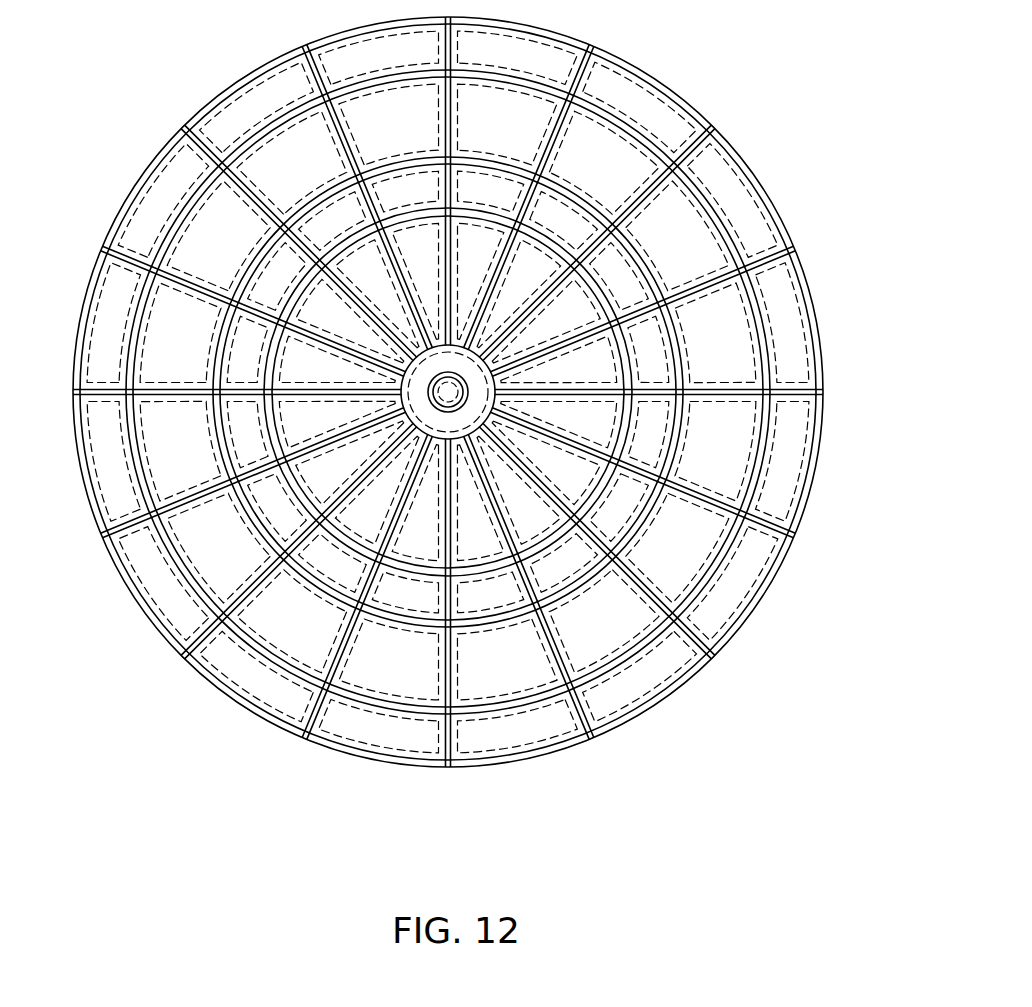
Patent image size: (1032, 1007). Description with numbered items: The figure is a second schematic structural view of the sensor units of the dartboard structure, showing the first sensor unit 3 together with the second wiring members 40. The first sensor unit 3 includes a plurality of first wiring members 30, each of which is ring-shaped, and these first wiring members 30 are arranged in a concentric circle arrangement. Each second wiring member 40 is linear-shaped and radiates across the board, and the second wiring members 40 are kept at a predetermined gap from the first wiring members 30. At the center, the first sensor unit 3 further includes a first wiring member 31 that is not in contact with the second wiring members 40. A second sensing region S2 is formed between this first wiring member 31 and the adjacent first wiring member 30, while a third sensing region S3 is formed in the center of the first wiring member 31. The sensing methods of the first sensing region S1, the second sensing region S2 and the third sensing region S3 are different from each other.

The first sensor unit 3 is at (475, 392).
The first wiring member 30 is at (767, 352).
The first wiring member 31 is at (465, 403).
The second wiring member 40 is at (710, 158).
The first sensing region S1 is at (748, 570).
The second sensing region S2 is at (467, 419).
The third sensing region S3 is at (445, 393).